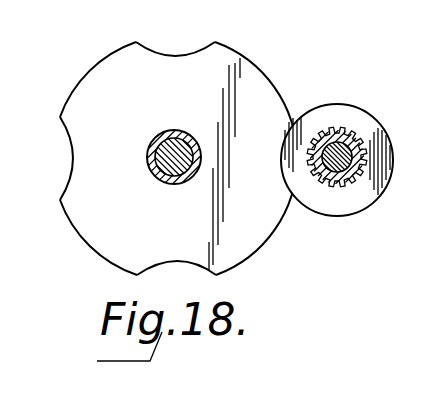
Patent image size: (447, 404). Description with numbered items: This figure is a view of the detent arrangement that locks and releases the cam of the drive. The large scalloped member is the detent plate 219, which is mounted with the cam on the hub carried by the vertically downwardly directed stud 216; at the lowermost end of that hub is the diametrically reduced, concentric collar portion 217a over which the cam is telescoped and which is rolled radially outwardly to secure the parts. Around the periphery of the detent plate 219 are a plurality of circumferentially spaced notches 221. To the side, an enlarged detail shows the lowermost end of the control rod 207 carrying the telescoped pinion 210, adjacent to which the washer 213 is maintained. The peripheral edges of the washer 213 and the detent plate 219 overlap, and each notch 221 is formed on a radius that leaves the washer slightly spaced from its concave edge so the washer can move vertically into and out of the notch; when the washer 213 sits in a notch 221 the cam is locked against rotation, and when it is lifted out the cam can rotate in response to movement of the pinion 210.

The detent plate 219 is at (258, 236).
The notches 221 is at (172, 56).
The stud 216 is at (170, 172).
The collar portion 217a is at (175, 162).
The washer 213 is at (381, 130).
The pinion 210 is at (323, 134).
The control rod 207 is at (346, 136).